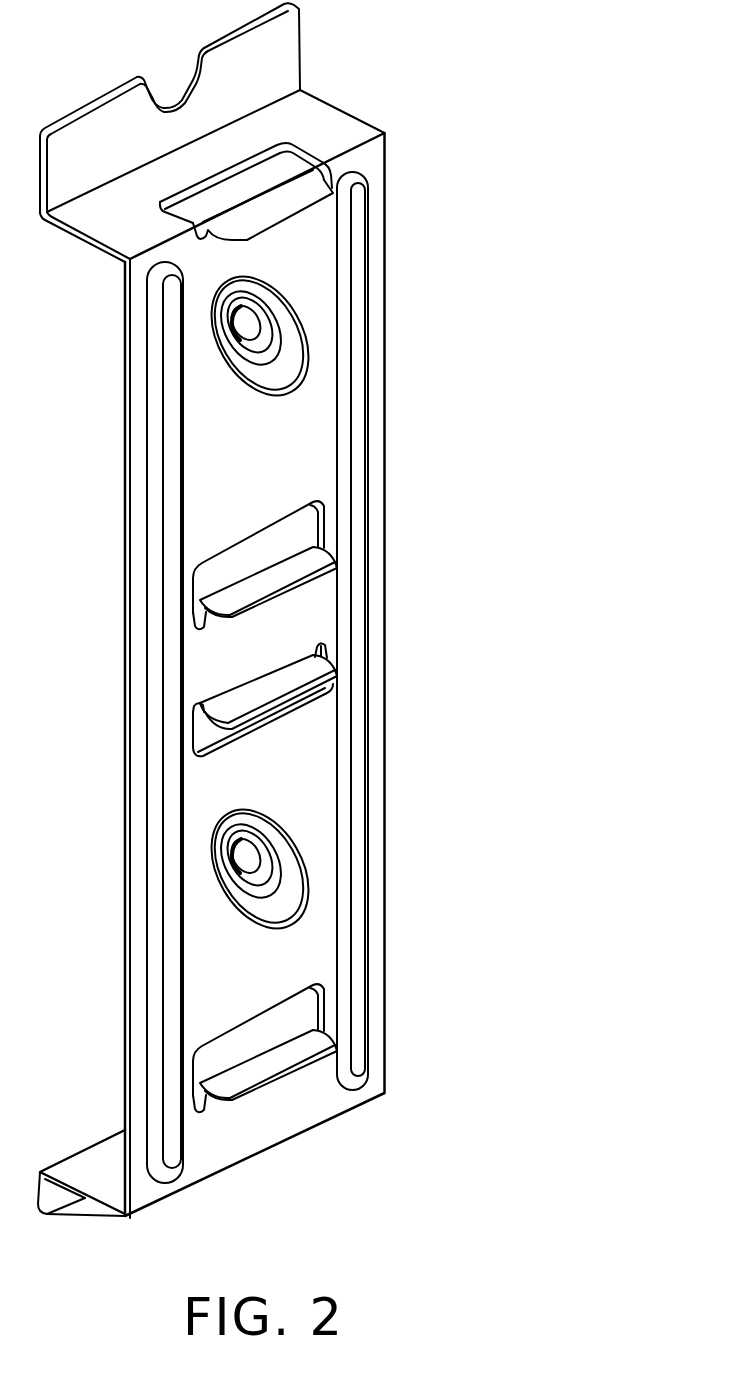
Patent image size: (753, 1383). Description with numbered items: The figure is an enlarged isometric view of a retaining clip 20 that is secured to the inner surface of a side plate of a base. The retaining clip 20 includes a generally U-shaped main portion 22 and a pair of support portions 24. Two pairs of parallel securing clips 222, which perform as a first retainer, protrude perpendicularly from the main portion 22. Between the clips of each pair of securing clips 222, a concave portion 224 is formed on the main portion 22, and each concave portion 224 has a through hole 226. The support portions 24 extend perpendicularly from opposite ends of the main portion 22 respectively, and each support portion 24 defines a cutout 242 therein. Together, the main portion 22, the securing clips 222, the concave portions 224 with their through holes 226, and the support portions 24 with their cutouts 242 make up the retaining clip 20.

The retaining clip 20 is at (385, 233).
The main portion 22 is at (305, 626).
The support portion 24 is at (282, 72).
The cutout 242 is at (173, 85).
The securing clip 222 is at (310, 192).
The concave portion 224 is at (263, 367).
The through hole 226 is at (240, 330).